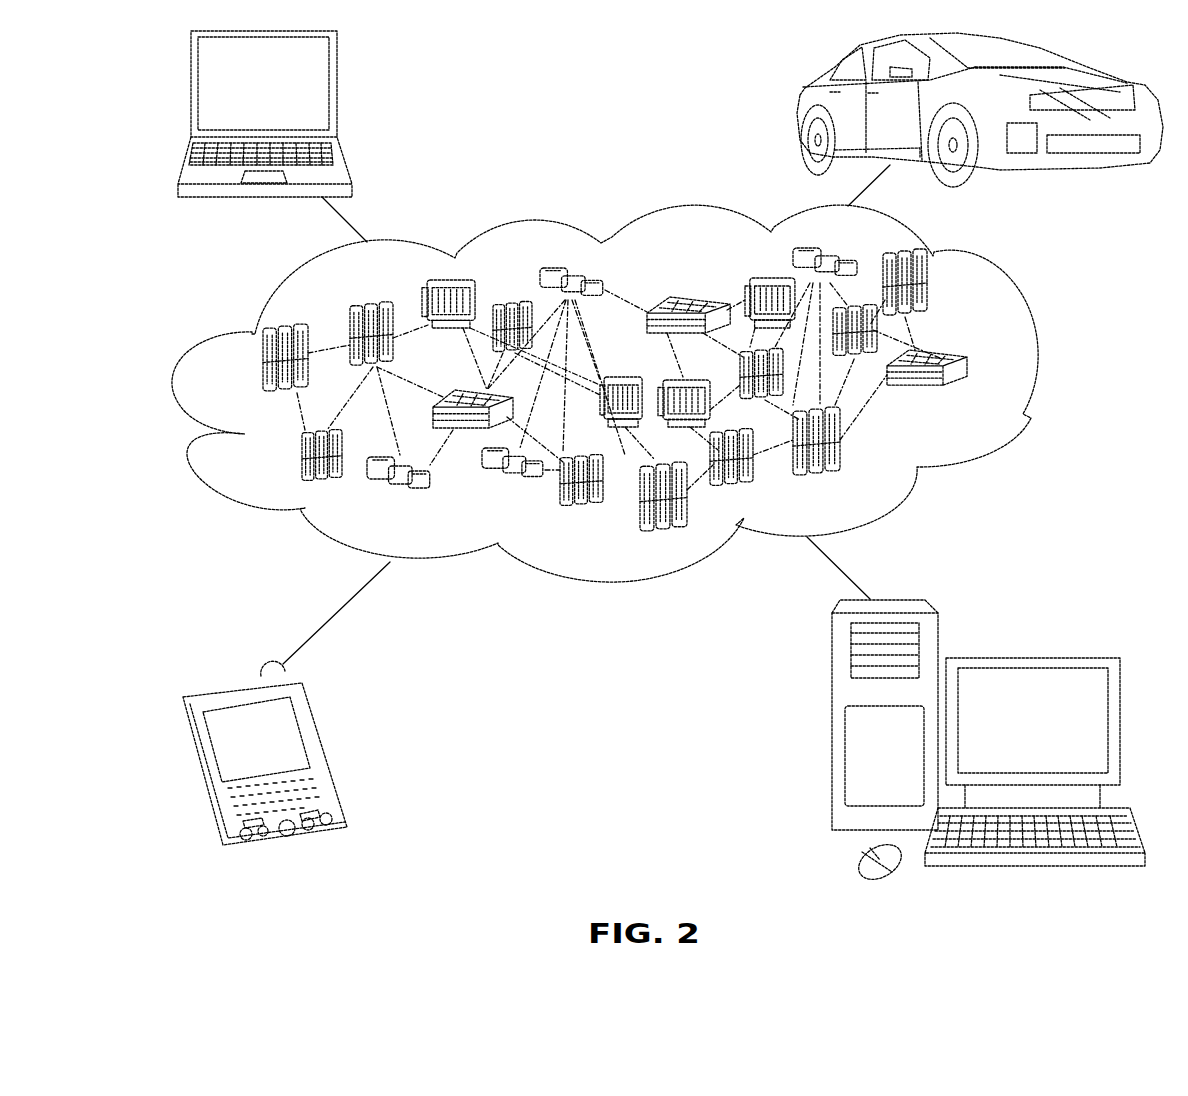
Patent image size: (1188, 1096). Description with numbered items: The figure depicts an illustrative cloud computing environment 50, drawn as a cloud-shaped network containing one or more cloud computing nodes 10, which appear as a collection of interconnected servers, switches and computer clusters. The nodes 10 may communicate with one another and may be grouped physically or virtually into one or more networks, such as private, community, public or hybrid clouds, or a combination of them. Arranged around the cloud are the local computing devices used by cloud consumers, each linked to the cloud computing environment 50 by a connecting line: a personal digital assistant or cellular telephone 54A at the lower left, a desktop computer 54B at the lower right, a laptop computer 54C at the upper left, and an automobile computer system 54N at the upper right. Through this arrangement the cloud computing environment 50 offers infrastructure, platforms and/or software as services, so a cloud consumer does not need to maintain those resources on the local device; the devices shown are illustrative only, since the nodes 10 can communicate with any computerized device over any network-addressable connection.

The cloud computing environment 50 is at (1033, 369).
The cloud computing nodes 10 is at (968, 395).
The personal digital assistant (PDA) or cellular telephone 54A is at (329, 752).
The desktop computer 54B is at (1030, 662).
The laptop computer 54C is at (337, 93).
The automobile computer system 54N is at (801, 108).